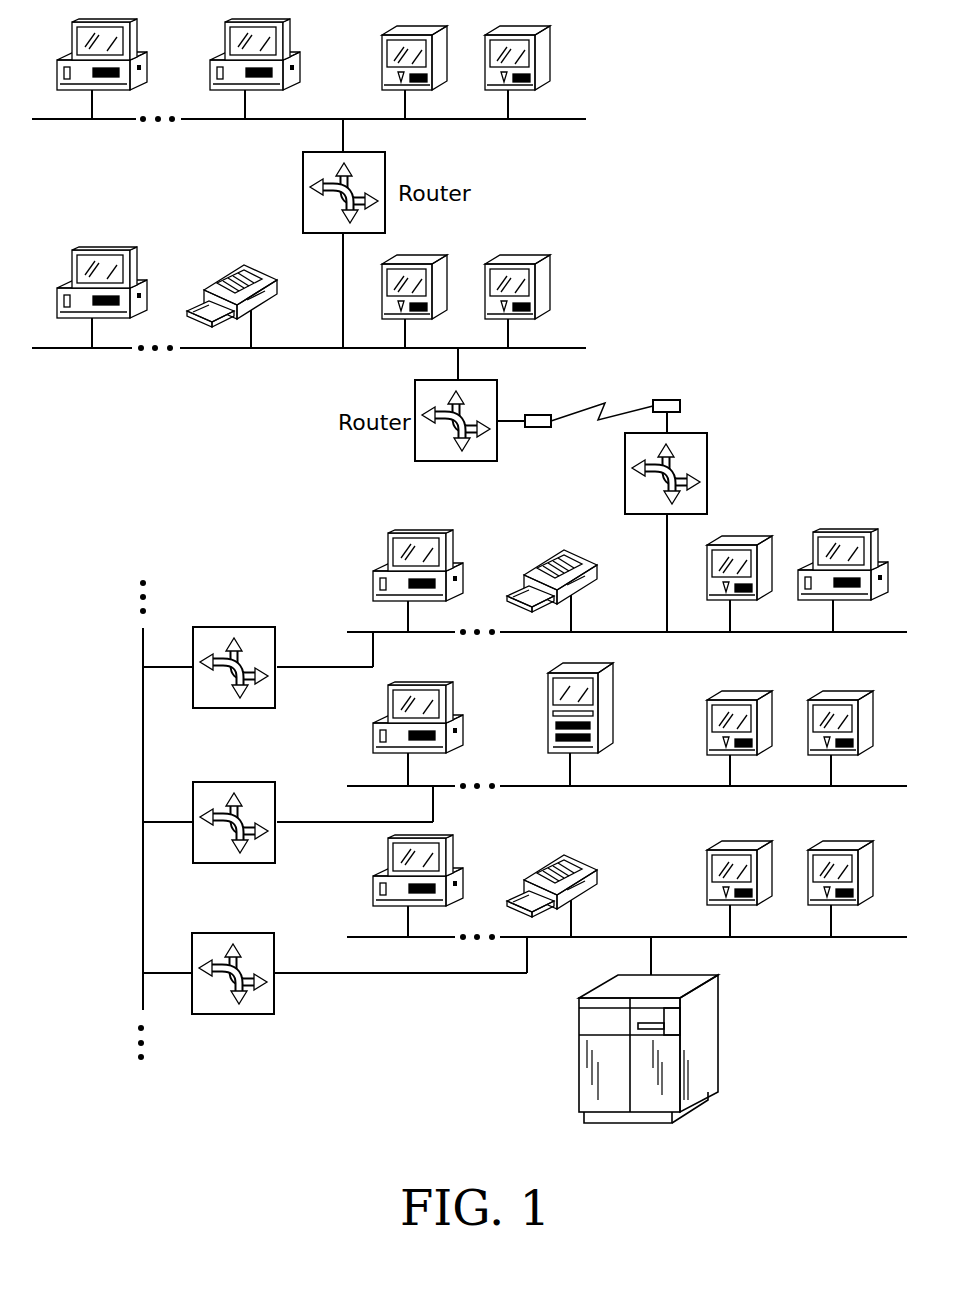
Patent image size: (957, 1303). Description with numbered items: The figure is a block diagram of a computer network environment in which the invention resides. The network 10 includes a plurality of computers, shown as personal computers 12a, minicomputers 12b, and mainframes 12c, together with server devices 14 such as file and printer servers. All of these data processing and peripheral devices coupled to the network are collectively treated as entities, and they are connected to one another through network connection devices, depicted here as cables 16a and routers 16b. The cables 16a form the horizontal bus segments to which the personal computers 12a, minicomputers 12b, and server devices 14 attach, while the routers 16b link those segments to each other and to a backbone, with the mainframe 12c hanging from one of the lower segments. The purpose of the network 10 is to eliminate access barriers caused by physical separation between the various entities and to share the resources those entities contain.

The network 10 is at (76, 803).
The personal computers 12a is at (382, 42).
The minicomputers 12b is at (878, 567).
The mainframes 12c is at (579, 1066).
The server devices 14 is at (65, 67).
The cables 16a is at (215, 124).
The routers 16b is at (710, 434).